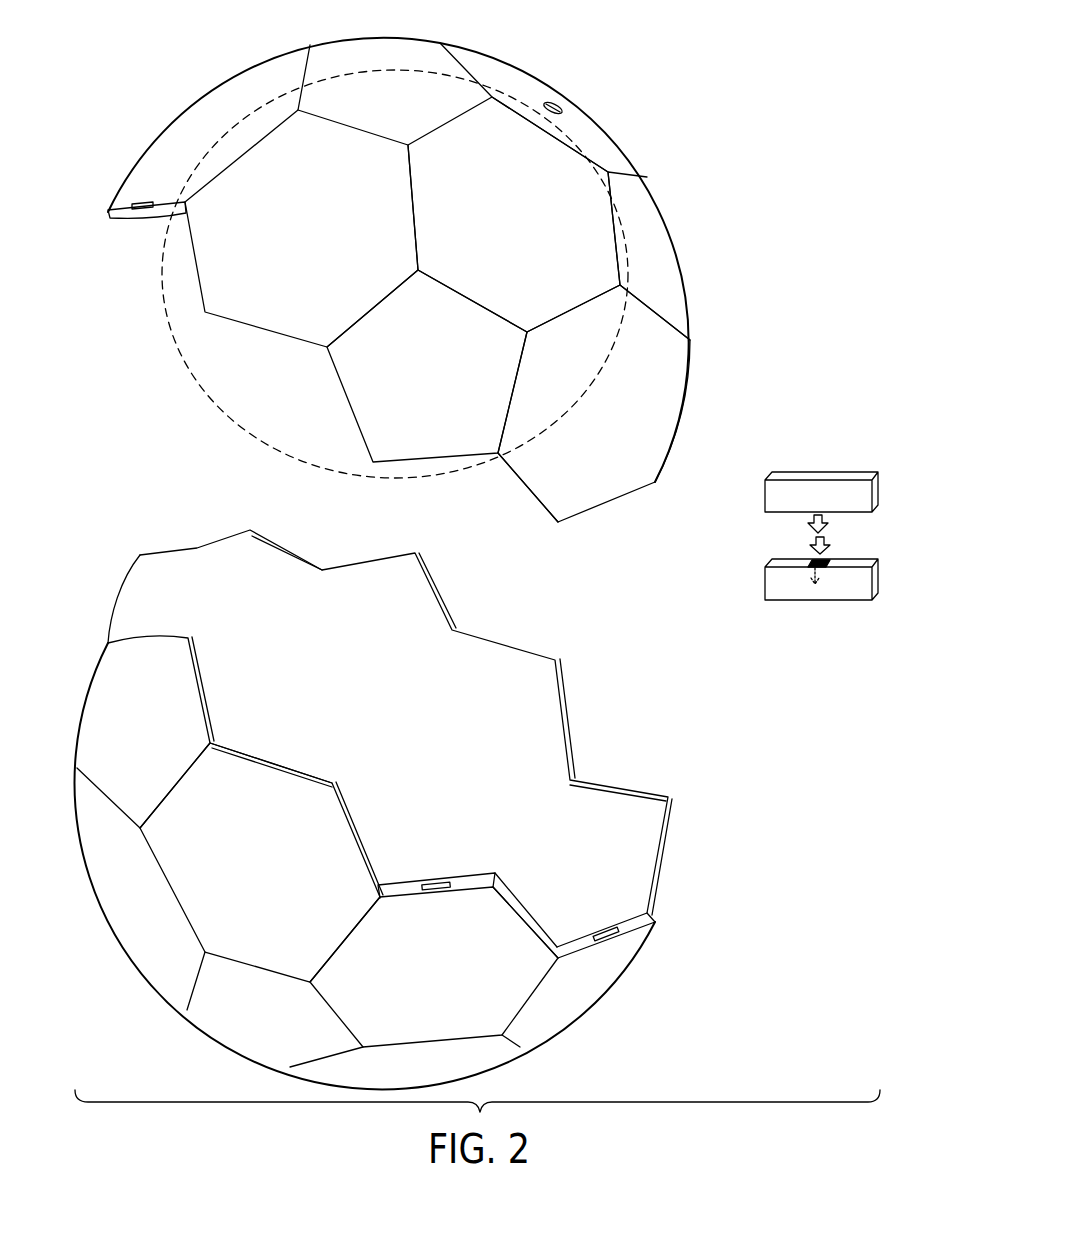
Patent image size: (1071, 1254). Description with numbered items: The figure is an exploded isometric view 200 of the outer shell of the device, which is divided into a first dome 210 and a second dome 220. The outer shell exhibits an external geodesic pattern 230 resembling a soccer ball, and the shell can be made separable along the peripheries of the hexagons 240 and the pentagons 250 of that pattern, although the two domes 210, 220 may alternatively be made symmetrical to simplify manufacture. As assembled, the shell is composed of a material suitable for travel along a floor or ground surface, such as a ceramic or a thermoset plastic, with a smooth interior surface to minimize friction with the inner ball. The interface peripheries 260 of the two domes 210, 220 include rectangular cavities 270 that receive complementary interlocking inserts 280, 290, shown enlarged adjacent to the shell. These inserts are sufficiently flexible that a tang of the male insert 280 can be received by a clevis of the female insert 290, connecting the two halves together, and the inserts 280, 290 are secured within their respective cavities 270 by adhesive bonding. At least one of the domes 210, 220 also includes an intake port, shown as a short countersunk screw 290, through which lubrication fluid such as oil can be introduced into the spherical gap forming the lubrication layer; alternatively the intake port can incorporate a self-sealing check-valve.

The exploded isometric view 200 is at (652, 63).
The first dome 210 is at (686, 272).
The second dome 220 is at (640, 953).
The external geodesic pattern 230 is at (204, 411).
The hexagons 240 is at (314, 242).
The pentagons 250 is at (439, 384).
The interface peripheries 260 is at (537, 500).
The rectangular cavities 270 is at (141, 220).
The male insert 280 is at (818, 470).
The female insert / intake port (countersunk screw) 290 is at (556, 100).